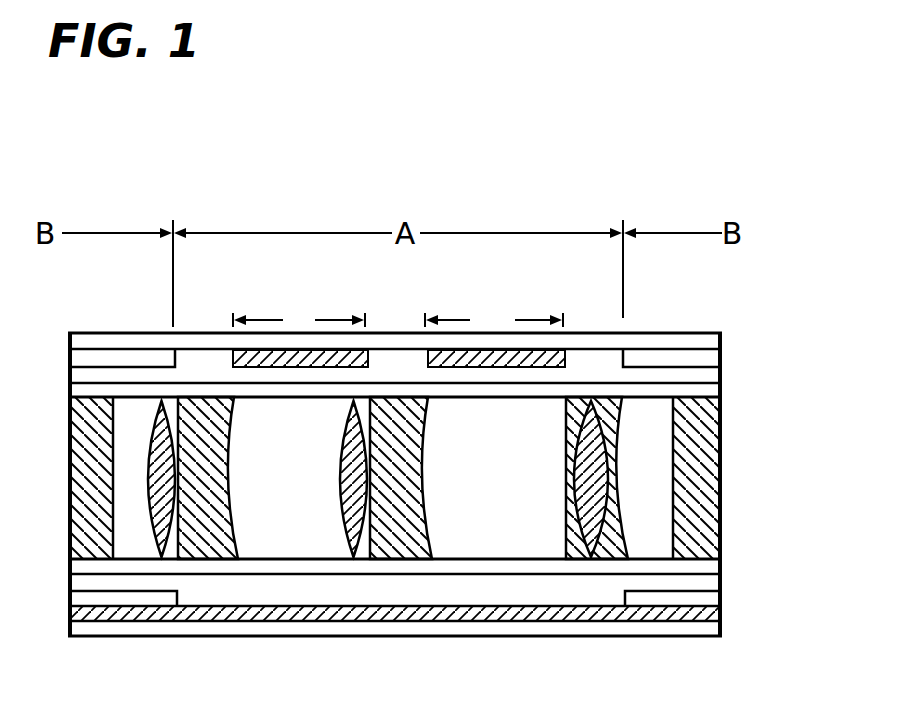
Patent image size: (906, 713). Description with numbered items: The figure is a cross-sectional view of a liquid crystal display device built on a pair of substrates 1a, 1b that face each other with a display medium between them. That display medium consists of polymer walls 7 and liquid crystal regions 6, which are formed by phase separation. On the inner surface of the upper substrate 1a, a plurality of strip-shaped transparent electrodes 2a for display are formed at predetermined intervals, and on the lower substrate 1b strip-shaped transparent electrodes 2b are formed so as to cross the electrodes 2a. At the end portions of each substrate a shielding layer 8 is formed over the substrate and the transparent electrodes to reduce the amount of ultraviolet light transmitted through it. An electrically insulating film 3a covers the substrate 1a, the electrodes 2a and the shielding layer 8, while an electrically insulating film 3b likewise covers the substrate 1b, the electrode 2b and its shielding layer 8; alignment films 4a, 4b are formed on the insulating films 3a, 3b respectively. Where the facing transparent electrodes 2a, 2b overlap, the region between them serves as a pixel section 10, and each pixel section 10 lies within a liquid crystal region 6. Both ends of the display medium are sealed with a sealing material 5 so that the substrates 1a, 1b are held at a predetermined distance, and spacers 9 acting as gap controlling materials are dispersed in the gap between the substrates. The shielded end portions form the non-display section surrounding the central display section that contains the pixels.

The substrate 1a is at (720, 334).
The substrate 1b is at (700, 628).
The transparent electrodes 2a is at (370, 363).
The transparent electrodes 2b is at (723, 617).
The electrically insulating film 3a is at (707, 383).
The electrically insulating film 3b is at (708, 588).
The alignment film 4a is at (707, 395).
The alignment film 4b is at (723, 572).
The sealing material 5 is at (84, 477).
The liquid crystal regions 6 is at (303, 555).
The polymer walls 7 is at (228, 553).
The shielding layer 8 is at (72, 357).
The spacers 9 is at (162, 556).
The pixel section 10 is at (398, 320).